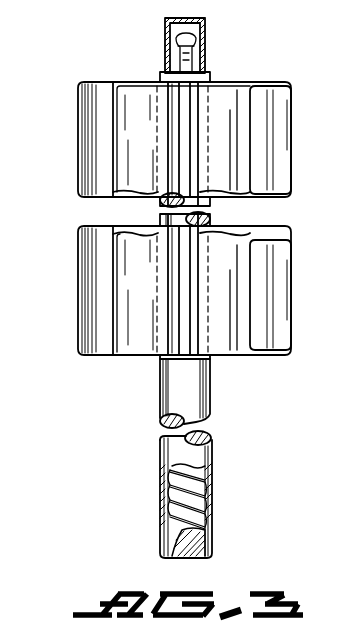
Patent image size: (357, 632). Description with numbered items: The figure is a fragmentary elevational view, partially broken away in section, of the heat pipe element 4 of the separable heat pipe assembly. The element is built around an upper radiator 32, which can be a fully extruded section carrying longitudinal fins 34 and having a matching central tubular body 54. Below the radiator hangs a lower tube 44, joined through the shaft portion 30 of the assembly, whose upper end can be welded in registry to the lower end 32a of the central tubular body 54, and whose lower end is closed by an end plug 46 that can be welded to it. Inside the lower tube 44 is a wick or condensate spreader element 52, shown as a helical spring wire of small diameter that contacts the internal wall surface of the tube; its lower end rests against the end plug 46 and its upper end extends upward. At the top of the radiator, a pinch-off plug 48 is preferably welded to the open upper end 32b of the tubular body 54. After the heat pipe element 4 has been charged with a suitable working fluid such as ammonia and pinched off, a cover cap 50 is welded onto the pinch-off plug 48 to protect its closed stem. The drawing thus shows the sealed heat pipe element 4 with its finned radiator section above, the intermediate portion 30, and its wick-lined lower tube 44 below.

The heat pipe element 4 is at (78, 210).
The shaft 30 is at (212, 398).
The upper radiator 32 is at (78, 130).
The lower end of the radiator tubular body 32a is at (160, 358).
The open upper end of the radiator tubular body 32b is at (160, 80).
The longitudinal fins 34 is at (113, 292).
The lower tube 44 is at (160, 452).
The end plug 46 is at (201, 557).
The pinch-off plug 48 is at (210, 71).
The cover cap 50 is at (165, 32).
The wick or condensate spreader element 52 is at (206, 497).
The central tubular body 54 is at (212, 220).